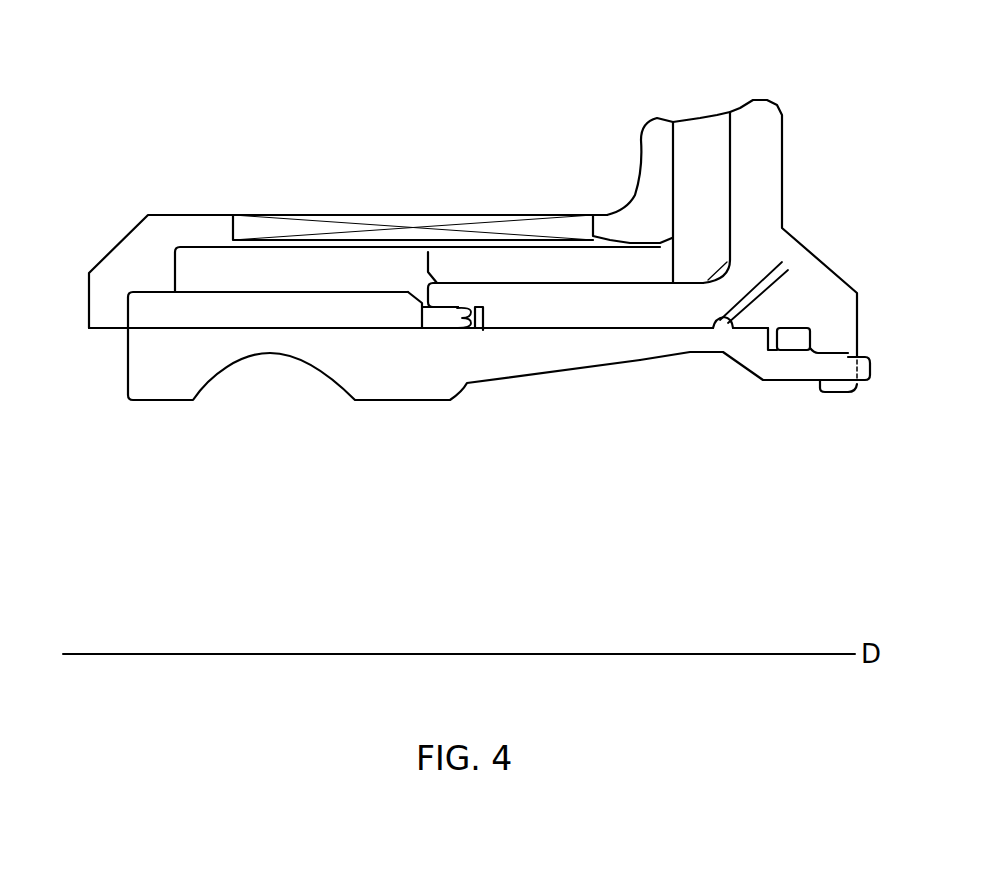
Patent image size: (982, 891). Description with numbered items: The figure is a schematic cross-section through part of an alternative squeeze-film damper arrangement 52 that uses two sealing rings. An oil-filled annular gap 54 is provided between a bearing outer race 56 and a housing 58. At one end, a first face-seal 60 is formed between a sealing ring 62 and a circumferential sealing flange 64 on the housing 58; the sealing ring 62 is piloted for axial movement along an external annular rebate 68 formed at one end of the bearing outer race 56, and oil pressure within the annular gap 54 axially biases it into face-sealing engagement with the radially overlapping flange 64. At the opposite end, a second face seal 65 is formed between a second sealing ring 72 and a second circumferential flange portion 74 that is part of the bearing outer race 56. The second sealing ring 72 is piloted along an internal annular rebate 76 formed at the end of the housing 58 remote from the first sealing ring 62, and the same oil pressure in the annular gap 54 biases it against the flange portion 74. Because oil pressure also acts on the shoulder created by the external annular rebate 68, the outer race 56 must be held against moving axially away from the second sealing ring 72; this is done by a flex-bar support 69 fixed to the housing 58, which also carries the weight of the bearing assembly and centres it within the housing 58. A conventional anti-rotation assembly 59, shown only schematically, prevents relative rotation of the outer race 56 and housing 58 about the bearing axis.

The squeeze-film arrangement 52 is at (116, 68).
The annular gap 54 is at (547, 330).
The bearing outer race 56 is at (367, 330).
The housing 58 is at (672, 235).
The anti-rotation assembly 59 is at (837, 370).
The first face-seal 60 is at (810, 340).
The sealing ring 62 is at (793, 340).
The circumferential sealing flange 64 is at (835, 340).
The second face seal 65 is at (418, 313).
The external annular rebate 68 is at (773, 348).
The flex-bar support 69 is at (182, 232).
The second sealing ring 72 is at (450, 317).
The second circumferential flange portion 74 is at (410, 290).
The internal annular rebate 76 is at (89, 328).